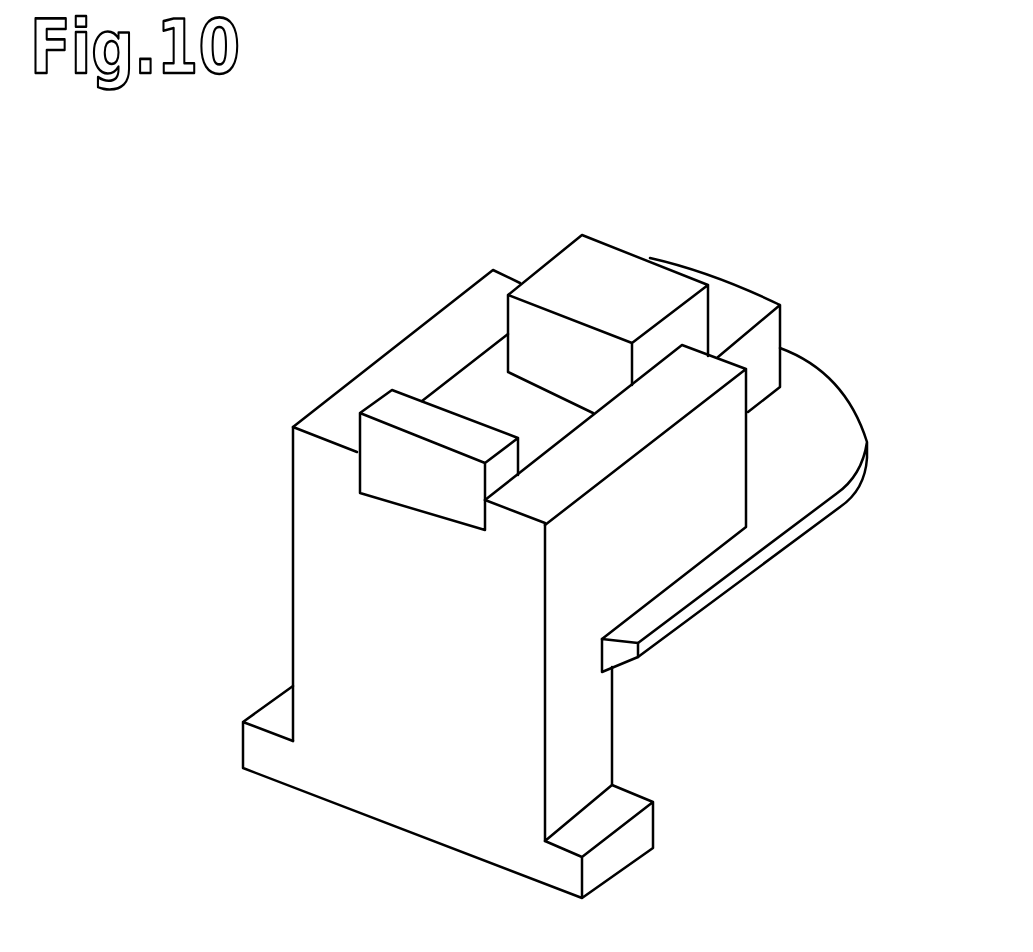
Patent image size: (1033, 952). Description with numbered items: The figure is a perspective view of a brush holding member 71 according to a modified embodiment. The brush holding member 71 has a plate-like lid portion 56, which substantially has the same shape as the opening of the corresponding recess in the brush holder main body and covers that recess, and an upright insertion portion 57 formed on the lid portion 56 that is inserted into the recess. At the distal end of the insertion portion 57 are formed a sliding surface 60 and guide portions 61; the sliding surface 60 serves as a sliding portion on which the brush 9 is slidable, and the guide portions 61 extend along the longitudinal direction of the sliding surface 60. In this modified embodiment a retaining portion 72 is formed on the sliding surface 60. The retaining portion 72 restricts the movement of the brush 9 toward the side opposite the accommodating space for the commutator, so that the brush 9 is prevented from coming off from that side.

The brush holding member 71 is at (815, 211).
The brush 9 is at (600, 253).
The guide portion 61 is at (503, 278).
The sliding surface 60 is at (772, 300).
The lid portion 56 is at (853, 407).
The insertion portion 57 is at (750, 478).
The retaining portion 72 is at (373, 404).